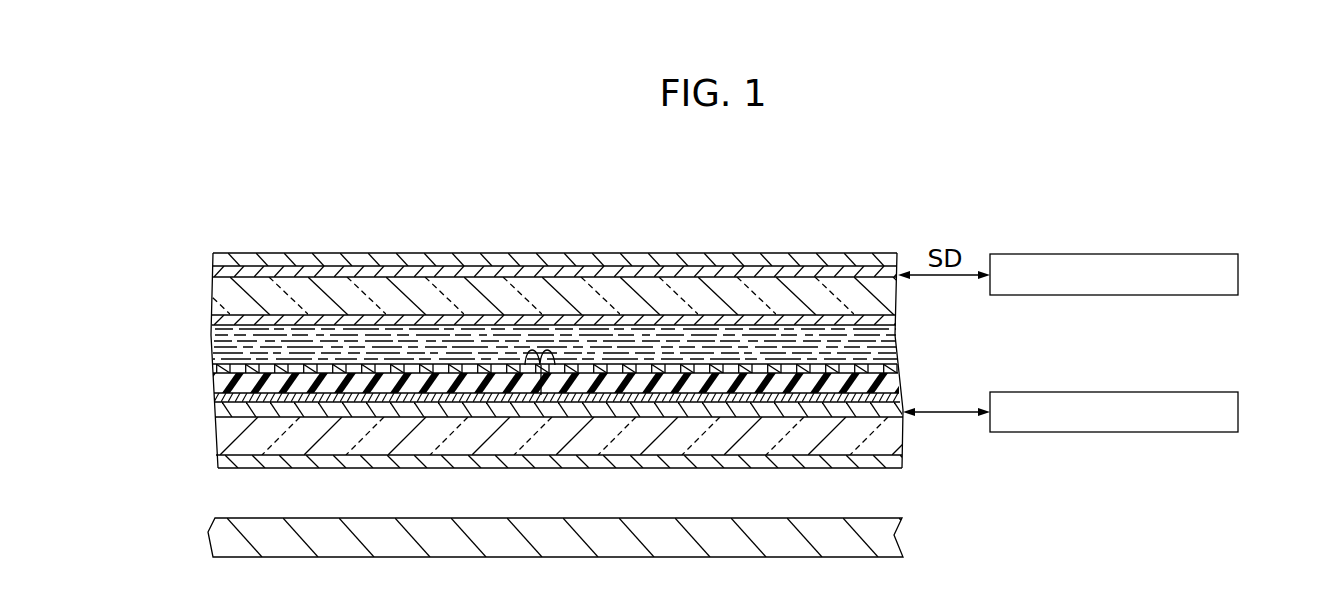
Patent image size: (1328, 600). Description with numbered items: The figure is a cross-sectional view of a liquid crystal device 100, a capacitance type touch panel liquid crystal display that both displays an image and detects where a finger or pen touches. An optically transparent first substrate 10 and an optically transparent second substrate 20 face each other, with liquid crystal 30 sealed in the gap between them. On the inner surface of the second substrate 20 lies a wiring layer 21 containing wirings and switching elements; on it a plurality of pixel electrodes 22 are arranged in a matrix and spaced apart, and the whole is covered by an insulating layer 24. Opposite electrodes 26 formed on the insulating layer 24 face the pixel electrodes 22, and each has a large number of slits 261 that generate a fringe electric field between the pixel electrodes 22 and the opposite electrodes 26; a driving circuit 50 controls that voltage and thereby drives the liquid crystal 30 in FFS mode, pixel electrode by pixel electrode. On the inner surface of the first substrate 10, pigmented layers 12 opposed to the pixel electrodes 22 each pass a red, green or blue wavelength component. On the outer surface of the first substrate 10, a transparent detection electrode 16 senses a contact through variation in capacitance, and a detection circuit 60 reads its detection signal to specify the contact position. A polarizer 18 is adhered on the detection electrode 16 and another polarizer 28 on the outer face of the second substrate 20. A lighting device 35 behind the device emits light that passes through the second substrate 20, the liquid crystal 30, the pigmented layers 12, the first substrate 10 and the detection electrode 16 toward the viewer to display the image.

The first substrate 10 is at (212, 298).
The pigmented layers 12 is at (388, 318).
The detection electrode 16 is at (213, 272).
The polarizer 18 is at (214, 260).
The second substrate 20 is at (902, 447).
The wiring layer 21 is at (222, 410).
The pixel electrodes 22 is at (378, 401).
The insulating layer 24 is at (218, 383).
The opposite electrodes 26 is at (216, 369).
The polarizer 28 is at (220, 462).
The liquid crystal 30 is at (896, 350).
The lighting device 35 is at (220, 536).
The driving circuit 50 is at (1238, 410).
The detection circuit 60 is at (1238, 270).
The liquid crystal device 100 is at (1050, 465).
The slits 261 is at (843, 373).